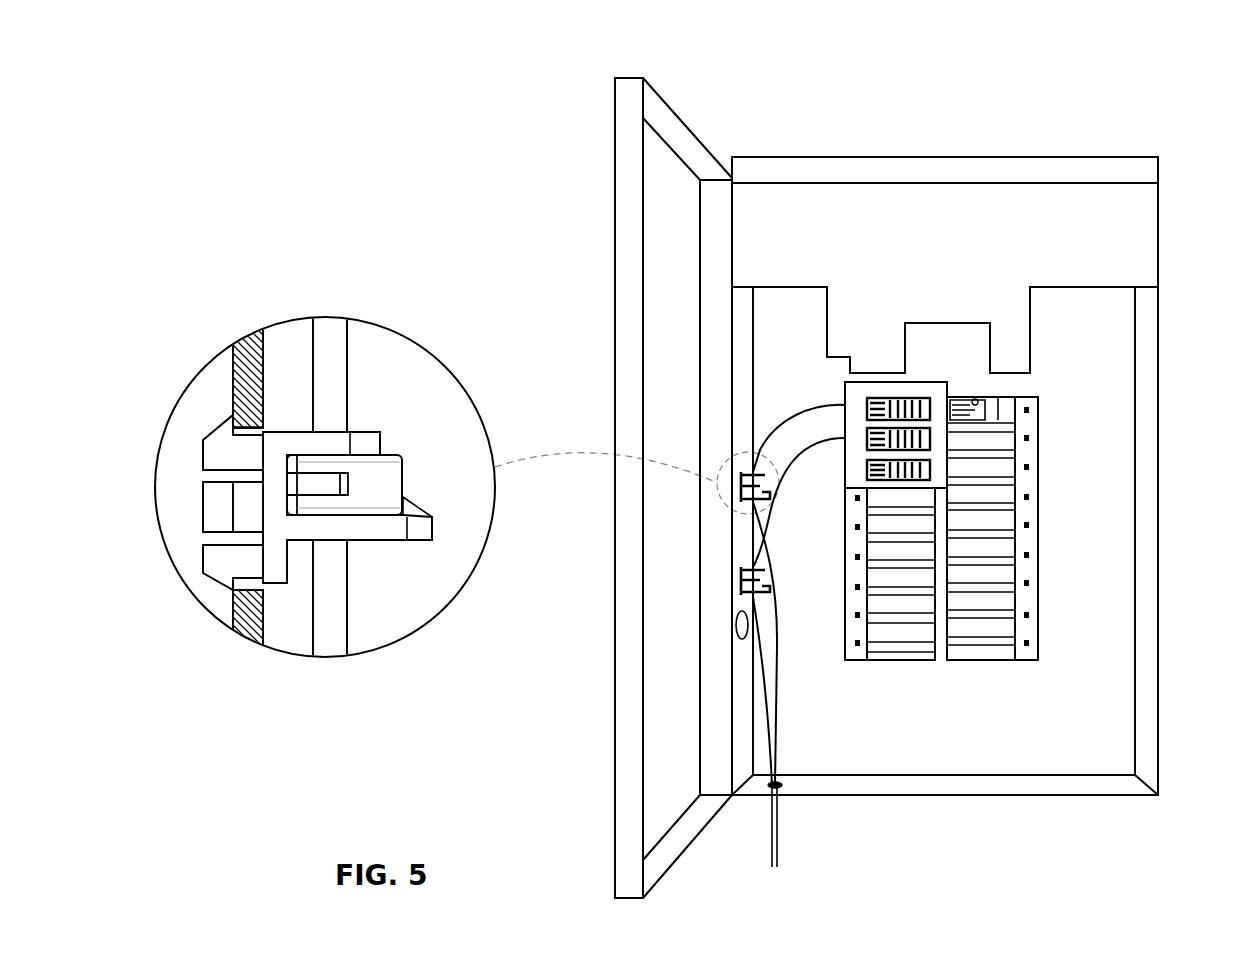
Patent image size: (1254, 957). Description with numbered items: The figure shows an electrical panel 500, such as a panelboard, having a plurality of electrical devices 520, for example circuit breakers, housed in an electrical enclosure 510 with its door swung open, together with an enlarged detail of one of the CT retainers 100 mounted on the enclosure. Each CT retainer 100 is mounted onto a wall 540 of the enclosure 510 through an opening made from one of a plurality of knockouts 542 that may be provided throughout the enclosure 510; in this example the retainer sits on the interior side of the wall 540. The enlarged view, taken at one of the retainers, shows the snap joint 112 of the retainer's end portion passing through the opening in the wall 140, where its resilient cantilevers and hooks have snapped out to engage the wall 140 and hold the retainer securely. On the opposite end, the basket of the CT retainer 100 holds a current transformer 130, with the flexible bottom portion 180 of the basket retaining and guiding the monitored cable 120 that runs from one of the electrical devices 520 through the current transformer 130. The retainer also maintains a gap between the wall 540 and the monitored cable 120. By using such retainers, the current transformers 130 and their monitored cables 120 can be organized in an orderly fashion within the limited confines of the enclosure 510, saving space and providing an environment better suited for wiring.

The CT retainer 100 is at (386, 382).
The snap joint 112 is at (213, 457).
The monitored cable 120 is at (332, 328).
The current transformer 130 is at (416, 443).
The wall 140 is at (247, 340).
The bottom portion 180 is at (362, 538).
The electrical panel 500 is at (1117, 71).
The electrical enclosure 510 is at (918, 157).
The electrical devices 520 is at (1064, 380).
The wall 540 is at (743, 375).
The knockouts 542 is at (748, 625).